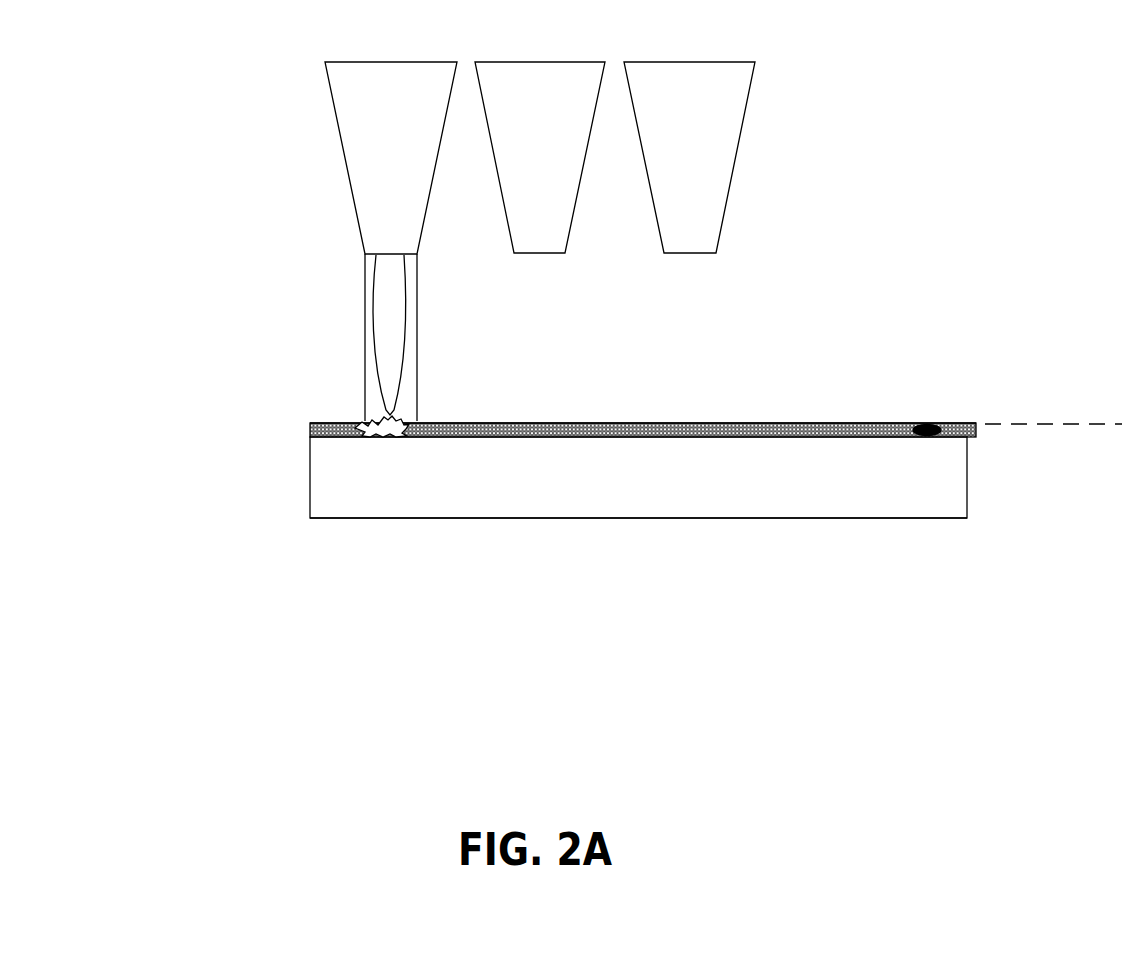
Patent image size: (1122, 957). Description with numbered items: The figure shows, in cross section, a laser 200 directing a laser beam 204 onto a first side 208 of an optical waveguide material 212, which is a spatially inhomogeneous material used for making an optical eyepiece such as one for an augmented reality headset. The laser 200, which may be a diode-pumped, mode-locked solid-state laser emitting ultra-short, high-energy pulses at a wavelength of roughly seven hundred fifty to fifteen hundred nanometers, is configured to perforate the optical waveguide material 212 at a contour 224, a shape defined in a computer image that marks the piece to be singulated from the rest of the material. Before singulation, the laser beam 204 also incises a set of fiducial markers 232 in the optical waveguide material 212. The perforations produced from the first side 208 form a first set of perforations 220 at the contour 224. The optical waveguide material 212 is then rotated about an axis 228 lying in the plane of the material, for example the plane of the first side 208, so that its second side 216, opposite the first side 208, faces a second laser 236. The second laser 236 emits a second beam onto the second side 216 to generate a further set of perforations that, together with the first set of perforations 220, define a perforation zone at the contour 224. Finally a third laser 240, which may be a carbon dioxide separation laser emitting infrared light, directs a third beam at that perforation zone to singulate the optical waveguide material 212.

The laser 200 is at (418, 141).
The second laser 236 is at (566, 140).
The third laser 240 is at (715, 140).
The laser beam 204 is at (393, 317).
The optical waveguide material 212 is at (653, 488).
The first side 208 is at (858, 423).
The contour 224 is at (733, 432).
The first set of perforations 220 is at (372, 433).
The fiducial markers 232 is at (922, 423).
The axis 228 is at (1120, 424).
The second side 216 is at (790, 519).